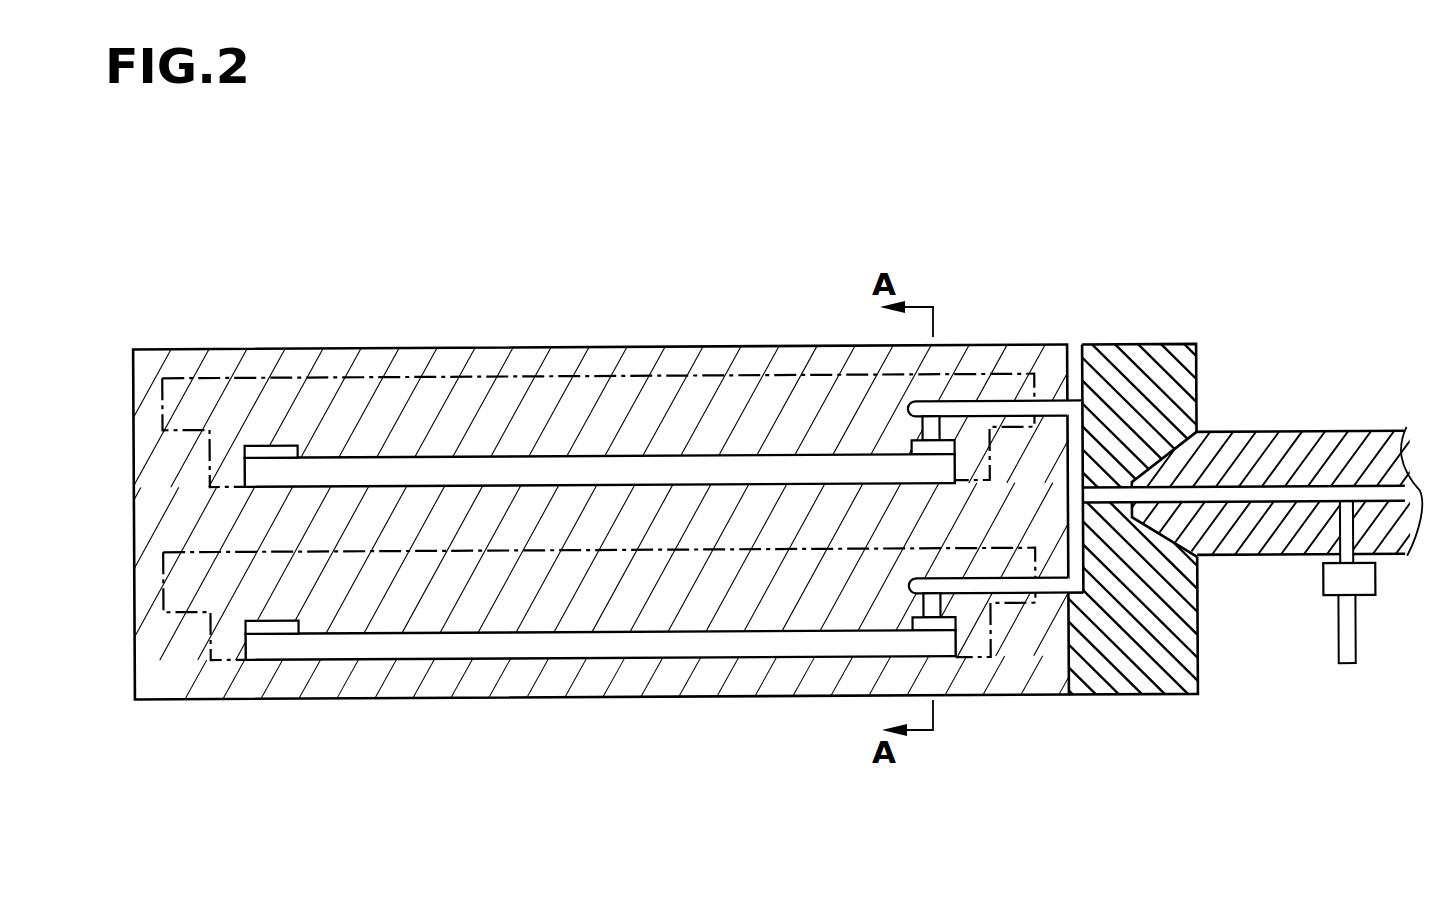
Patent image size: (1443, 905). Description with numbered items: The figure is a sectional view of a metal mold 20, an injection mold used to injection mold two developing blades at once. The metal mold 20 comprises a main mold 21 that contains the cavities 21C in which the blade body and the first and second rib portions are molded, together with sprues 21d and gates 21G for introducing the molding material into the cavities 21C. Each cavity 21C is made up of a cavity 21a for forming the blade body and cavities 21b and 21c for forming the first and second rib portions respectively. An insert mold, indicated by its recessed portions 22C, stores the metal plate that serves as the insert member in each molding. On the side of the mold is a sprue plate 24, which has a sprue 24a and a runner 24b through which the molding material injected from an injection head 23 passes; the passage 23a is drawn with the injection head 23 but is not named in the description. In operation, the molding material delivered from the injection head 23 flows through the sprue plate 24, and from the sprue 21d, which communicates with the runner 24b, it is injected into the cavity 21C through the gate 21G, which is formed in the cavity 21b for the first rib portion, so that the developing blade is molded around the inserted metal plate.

The metal mold 20 is at (711, 295).
The main mold 21 is at (648, 516).
The cavity 21C is at (690, 527).
The cavity 21a is at (413, 477).
The cavity 21b is at (912, 440).
The cavity 21c is at (270, 450).
The sprue 21d is at (943, 407).
The gate 21G is at (962, 440).
The recessed portion 22C is at (232, 372).
The injection head 23 is at (1246, 508).
The tube passage 23a is at (1210, 493).
The sprue plate 24 is at (1082, 482).
The sprue 24a is at (1197, 565).
The runner 24b is at (1092, 397).